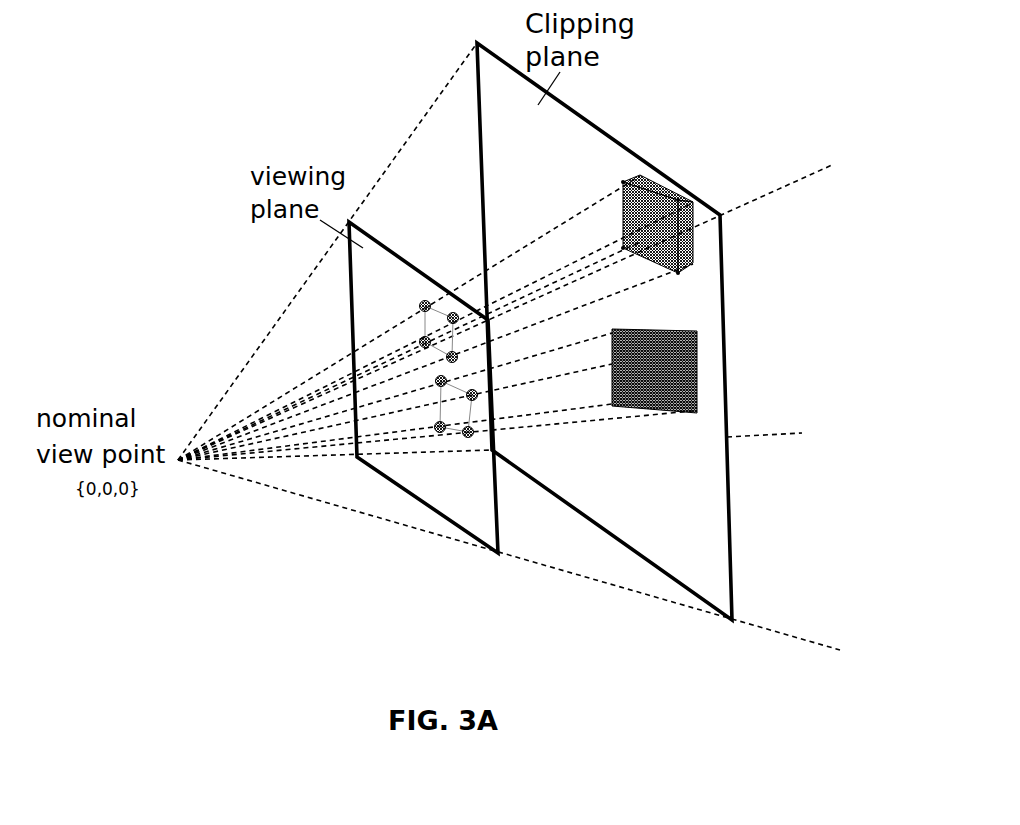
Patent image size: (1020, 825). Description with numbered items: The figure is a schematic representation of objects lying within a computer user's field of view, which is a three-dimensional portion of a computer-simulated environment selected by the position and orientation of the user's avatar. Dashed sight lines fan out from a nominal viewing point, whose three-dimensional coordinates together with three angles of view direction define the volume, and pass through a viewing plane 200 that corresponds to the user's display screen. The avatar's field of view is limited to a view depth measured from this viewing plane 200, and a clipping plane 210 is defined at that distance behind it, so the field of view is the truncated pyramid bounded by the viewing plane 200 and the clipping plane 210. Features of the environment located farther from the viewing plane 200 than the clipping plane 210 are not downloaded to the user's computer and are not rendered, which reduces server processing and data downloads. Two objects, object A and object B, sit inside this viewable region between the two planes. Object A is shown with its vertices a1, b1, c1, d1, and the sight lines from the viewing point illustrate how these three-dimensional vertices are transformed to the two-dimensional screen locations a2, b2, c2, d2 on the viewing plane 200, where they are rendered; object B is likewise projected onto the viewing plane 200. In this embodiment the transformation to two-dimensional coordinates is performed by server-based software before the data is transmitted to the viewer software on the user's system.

The viewing plane 200 is at (465, 505).
The clipping plane 210 is at (698, 558).
The object A is at (658, 224).
The object B is at (654, 371).
The vertex a1 of 3D object A a1 is at (628, 166).
The vertex b1 of 3D object A b1 is at (693, 180).
The vertex c1 of 3D object A c1 is at (611, 255).
The vertex d1 of 3D object A d1 is at (695, 279).
The screen location a2 is at (421, 291).
The screen location b2 is at (463, 300).
The screen location c2 is at (416, 344).
The screen location d2 is at (466, 357).